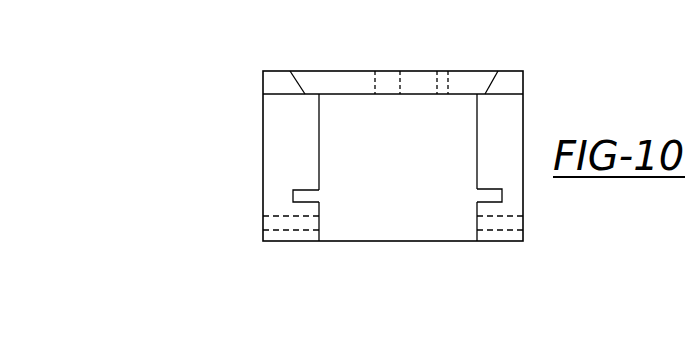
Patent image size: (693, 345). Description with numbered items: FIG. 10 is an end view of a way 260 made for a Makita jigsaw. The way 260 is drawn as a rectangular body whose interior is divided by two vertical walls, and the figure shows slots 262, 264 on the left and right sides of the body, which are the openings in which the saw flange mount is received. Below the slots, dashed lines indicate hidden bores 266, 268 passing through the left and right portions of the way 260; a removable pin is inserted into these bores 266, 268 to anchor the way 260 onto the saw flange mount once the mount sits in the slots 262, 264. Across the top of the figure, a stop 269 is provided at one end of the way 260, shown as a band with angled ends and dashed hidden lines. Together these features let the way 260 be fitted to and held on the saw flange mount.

The way 260 is at (262, 158).
The slot 262 is at (318, 194).
The slot 264 is at (482, 200).
The bore 266 is at (263, 222).
The bore 268 is at (523, 222).
The stop 269 is at (273, 78).